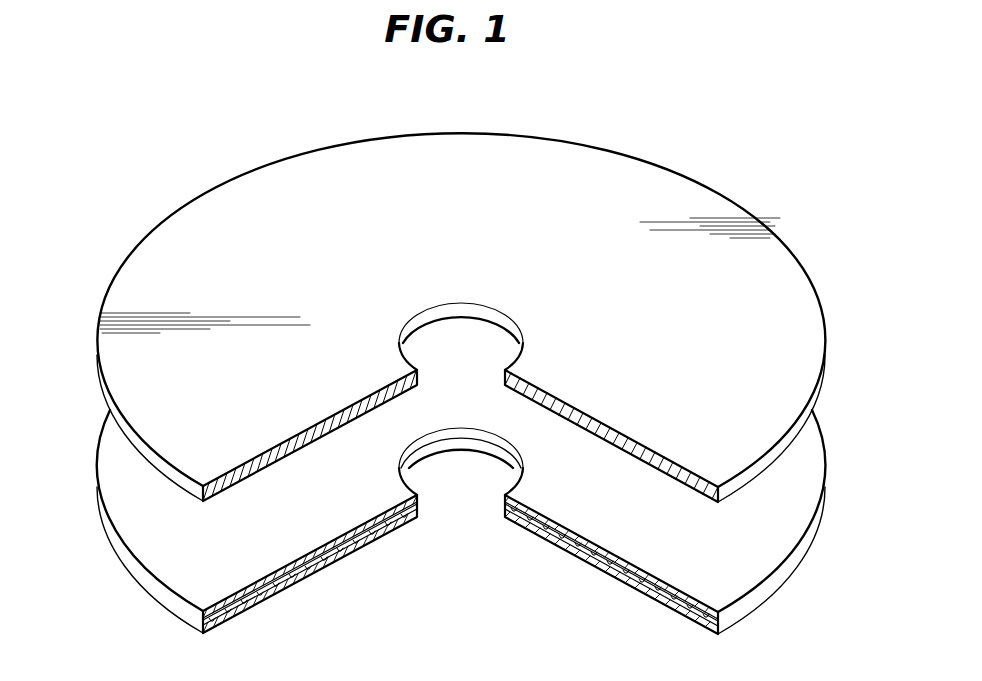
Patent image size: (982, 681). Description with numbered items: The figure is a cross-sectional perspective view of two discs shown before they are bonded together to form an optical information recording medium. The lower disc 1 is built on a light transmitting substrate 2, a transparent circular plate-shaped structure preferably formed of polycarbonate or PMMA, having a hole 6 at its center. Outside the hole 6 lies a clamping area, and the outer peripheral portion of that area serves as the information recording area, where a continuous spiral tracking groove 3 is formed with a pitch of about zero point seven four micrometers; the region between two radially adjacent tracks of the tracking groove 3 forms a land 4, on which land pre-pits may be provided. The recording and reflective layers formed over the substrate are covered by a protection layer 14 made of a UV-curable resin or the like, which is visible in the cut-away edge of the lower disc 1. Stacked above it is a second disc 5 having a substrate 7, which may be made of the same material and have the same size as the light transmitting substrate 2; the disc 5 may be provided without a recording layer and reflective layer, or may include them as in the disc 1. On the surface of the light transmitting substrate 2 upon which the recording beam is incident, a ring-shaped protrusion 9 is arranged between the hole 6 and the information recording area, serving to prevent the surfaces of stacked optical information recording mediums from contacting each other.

The disc 1 is at (132, 594).
The light transmitting substrate 2 is at (255, 600).
The tracking groove 3 is at (610, 572).
The land 4 is at (667, 593).
The disc 5 is at (722, 188).
The hole 6 is at (463, 347).
The substrate 7 is at (798, 284).
The protrusion 9 is at (525, 523).
The protection layer 14 is at (300, 545).